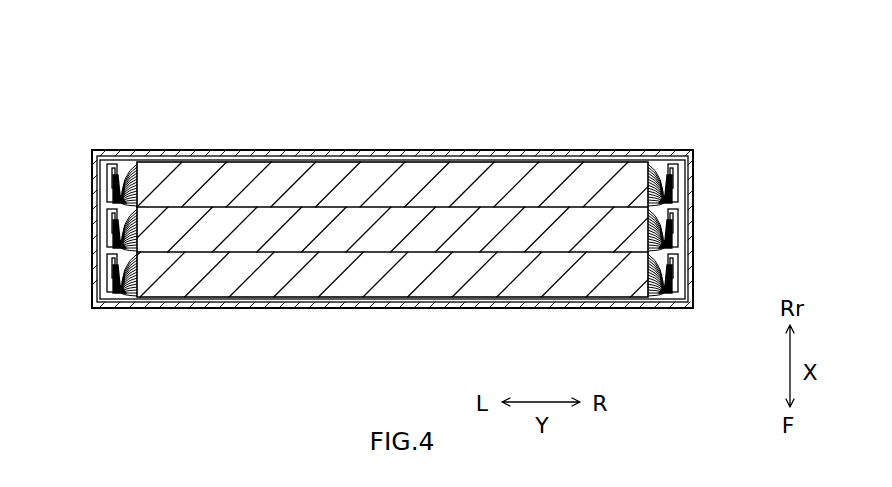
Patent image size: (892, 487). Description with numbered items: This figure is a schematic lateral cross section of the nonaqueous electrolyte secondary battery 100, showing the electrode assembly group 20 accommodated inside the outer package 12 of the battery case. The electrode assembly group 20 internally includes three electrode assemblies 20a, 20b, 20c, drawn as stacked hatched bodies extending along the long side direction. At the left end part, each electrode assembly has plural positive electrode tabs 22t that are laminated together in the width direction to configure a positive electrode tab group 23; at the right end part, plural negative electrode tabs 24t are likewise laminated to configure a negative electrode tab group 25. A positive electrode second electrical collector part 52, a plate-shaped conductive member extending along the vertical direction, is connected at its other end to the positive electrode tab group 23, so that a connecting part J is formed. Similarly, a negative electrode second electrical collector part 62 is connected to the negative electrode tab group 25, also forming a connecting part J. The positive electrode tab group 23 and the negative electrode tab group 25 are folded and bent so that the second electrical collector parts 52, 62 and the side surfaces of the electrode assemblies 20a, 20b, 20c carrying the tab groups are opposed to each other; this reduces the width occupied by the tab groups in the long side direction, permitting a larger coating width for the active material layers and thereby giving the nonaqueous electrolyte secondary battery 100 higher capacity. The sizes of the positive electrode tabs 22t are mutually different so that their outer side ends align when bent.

The nonaqueous electrolyte secondary battery 100 is at (390, 192).
The outer package 12 is at (518, 138).
The electrode assembly group 20 is at (392, 166).
The electrode assembly 20a is at (328, 270).
The electrode assembly 20b is at (265, 227).
The electrode assembly 20c is at (232, 183).
The positive electrode tab 22t is at (122, 164).
The negative electrode tab 24t is at (662, 163).
The positive electrode second electrical collector part 52 is at (108, 168).
The negative electrode second electrical collector part 62 is at (677, 168).
The connecting part J is at (108, 185).
The positive electrode tab group 23 is at (108, 325).
The negative electrode tab group 25 is at (677, 325).